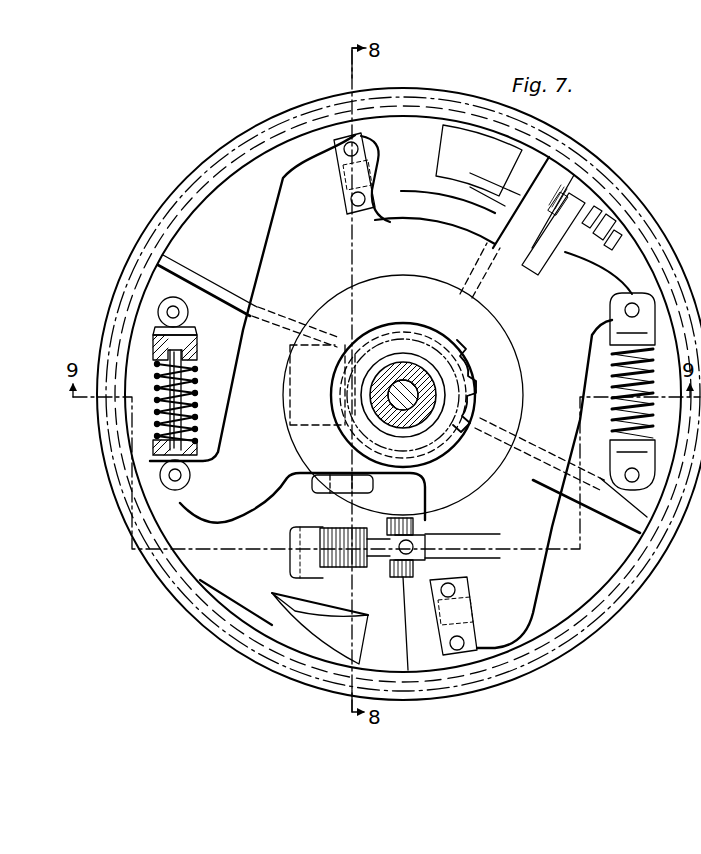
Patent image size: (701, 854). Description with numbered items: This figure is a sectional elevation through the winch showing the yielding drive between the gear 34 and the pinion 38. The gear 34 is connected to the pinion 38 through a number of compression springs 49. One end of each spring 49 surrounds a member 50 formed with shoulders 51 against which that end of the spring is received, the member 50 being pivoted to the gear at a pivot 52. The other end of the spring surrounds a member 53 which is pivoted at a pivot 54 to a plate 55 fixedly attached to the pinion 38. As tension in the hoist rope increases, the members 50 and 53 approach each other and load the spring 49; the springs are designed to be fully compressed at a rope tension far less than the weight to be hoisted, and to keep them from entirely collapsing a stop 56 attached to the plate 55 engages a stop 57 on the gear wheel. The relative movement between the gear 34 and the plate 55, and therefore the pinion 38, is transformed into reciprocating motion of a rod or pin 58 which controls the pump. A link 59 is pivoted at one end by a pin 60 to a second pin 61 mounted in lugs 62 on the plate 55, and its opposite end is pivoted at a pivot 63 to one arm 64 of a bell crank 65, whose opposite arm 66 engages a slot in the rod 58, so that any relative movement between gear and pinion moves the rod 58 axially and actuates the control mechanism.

The gear 34 is at (178, 187).
The pinion 38 is at (445, 365).
The springs 49 is at (157, 406).
The member 50 is at (153, 358).
The shoulders 51 is at (155, 340).
The pivot 52 is at (168, 312).
The member 53 is at (157, 443).
The pivot 54 is at (170, 477).
The plate 55 is at (210, 487).
The stop 56 is at (378, 140).
The stop 57 is at (397, 137).
The rod or pin 58 is at (424, 392).
The link 59 is at (382, 550).
The pin 60 is at (414, 546).
The second pin 61 is at (440, 560).
The lugs 62 is at (417, 523).
The pivot 63 is at (300, 578).
The arm 64 is at (320, 540).
The bell crank 65 is at (342, 488).
The arm 66 is at (398, 330).